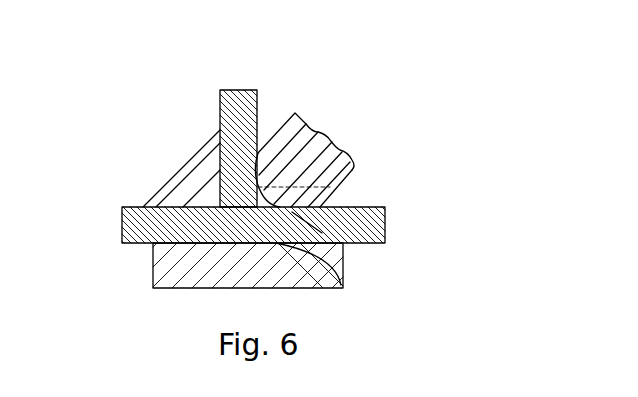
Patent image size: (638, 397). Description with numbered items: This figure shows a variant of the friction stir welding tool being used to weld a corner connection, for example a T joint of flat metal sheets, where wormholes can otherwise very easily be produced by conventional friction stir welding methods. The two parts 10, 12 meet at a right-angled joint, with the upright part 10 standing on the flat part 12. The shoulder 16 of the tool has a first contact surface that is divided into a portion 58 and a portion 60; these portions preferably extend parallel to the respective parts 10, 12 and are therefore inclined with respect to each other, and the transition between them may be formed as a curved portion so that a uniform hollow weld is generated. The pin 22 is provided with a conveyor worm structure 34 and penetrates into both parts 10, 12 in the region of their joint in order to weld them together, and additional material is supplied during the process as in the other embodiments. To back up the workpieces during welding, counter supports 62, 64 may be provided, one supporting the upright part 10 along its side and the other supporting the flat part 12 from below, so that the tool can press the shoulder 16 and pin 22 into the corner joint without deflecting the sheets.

The part 10 is at (240, 91).
The part 12 is at (362, 206).
The shoulder 16 is at (298, 122).
The pin 22 is at (331, 139).
The conveyor worm structure 34 is at (341, 285).
The portion of first contact surface 58 is at (216, 140).
The portion of first contact surface 60 is at (322, 233).
The counter support 62 is at (172, 173).
The counter support 64 is at (153, 263).